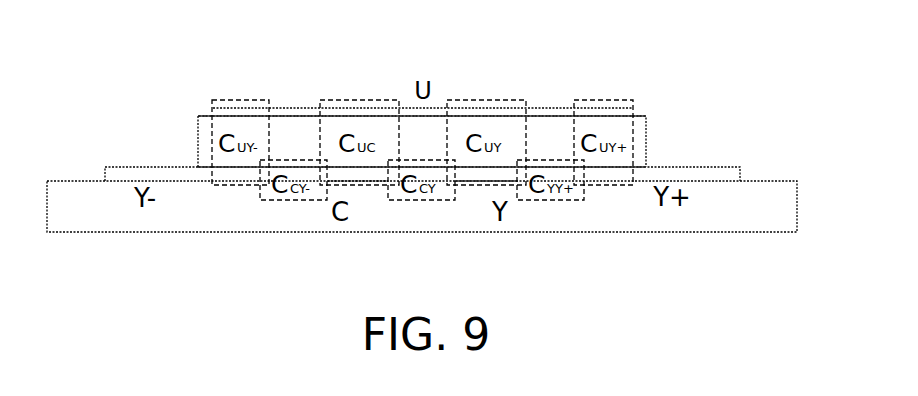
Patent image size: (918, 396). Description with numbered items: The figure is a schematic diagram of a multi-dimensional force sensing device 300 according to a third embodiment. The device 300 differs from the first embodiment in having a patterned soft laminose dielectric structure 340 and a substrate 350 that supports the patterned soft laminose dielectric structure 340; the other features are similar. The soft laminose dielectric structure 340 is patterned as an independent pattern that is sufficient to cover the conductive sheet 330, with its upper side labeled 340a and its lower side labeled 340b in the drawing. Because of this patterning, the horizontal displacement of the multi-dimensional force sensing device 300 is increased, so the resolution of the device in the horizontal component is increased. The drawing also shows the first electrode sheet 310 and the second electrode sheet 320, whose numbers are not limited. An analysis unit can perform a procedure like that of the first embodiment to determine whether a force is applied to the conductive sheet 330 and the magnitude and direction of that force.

The multi-dimensional force sensing device 300 is at (790, 53).
The first electrode sheet 310 is at (368, 180).
The second electrode sheet 320 is at (112, 174).
The conductive sheet 330 is at (617, 108).
The patterned soft laminose dielectric structure 340 is at (640, 143).
The upper surface of insulating layer 340a is at (203, 116).
The lower surface of insulating layer 340b is at (232, 168).
The substrate 350 is at (742, 218).